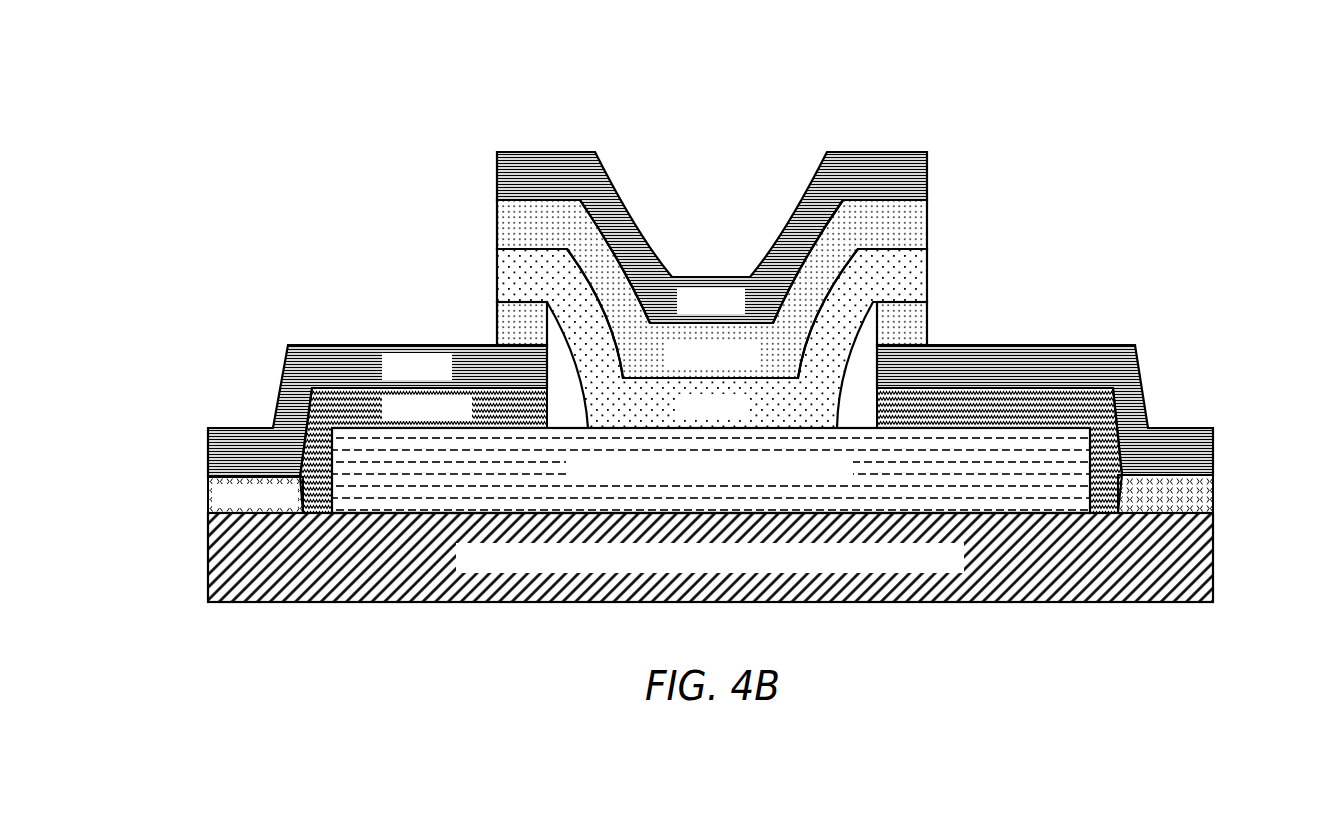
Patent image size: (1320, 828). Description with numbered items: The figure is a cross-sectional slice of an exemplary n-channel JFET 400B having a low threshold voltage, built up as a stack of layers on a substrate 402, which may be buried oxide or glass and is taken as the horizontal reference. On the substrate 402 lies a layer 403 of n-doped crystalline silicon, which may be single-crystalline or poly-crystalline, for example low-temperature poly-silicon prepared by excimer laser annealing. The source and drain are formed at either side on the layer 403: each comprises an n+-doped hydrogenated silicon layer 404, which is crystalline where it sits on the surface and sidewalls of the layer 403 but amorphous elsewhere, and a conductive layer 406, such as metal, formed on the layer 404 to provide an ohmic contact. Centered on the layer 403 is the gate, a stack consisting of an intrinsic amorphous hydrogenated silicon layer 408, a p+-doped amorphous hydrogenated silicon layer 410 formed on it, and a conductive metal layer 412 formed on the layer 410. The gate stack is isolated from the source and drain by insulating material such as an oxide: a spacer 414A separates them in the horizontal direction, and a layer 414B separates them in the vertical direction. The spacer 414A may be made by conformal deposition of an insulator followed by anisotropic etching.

The JFET 400B is at (299, 154).
The substrate 402 is at (208, 570).
The crystalline silicon layer 403 is at (1033, 440).
The n+-doped hydrogenated silicon layer 404 is at (208, 498).
The conductive layer 406 is at (1213, 452).
The intrinsic amorphous hydrogenated silicon layer 408 is at (927, 272).
The p+-doped amorphous hydrogenated silicon layer 410 is at (497, 223).
The conductive layer 412 is at (927, 172).
The spacer 414A is at (850, 388).
The layer 414B is at (497, 325).